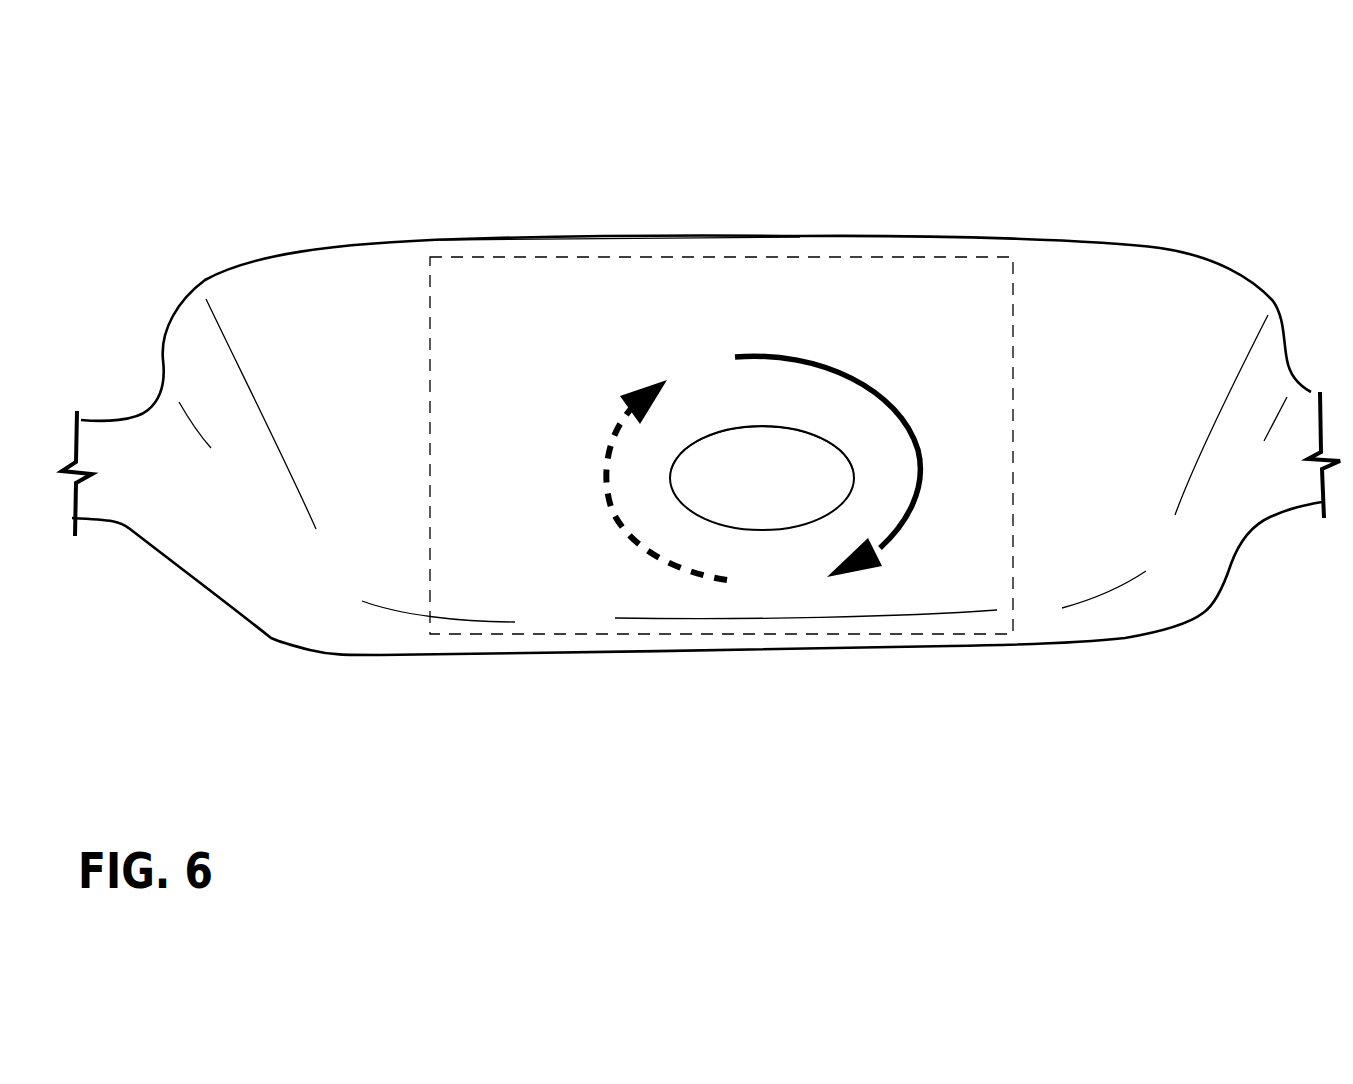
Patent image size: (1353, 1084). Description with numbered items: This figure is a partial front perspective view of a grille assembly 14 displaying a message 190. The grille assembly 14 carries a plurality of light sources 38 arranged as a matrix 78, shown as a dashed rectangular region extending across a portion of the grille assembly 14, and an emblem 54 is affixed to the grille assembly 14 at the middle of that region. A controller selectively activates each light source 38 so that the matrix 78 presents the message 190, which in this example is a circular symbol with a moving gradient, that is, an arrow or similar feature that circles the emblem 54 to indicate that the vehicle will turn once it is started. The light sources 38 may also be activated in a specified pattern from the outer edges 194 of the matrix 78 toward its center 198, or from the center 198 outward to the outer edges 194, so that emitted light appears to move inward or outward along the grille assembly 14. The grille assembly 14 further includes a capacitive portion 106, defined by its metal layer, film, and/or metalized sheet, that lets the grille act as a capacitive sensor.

The grille assembly 14 is at (1080, 202).
The light sources 38 is at (912, 298).
The emblem 54 is at (762, 522).
The matrix 78 is at (608, 257).
The capacitive portion 106 is at (525, 592).
The message 190 is at (890, 540).
The outer edges 194 is at (455, 313).
The center 198 is at (798, 330).